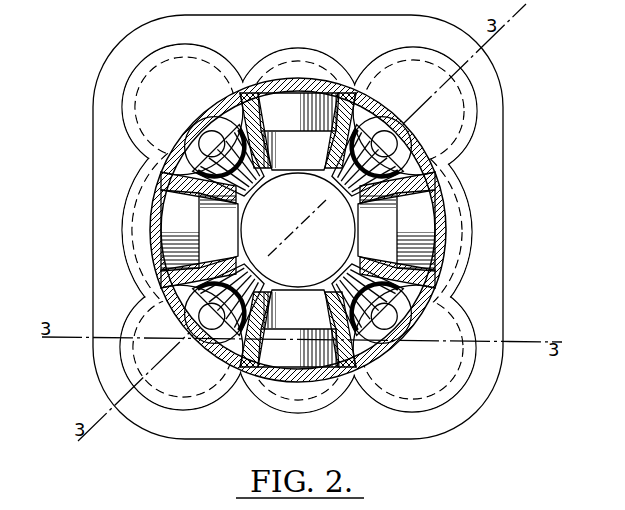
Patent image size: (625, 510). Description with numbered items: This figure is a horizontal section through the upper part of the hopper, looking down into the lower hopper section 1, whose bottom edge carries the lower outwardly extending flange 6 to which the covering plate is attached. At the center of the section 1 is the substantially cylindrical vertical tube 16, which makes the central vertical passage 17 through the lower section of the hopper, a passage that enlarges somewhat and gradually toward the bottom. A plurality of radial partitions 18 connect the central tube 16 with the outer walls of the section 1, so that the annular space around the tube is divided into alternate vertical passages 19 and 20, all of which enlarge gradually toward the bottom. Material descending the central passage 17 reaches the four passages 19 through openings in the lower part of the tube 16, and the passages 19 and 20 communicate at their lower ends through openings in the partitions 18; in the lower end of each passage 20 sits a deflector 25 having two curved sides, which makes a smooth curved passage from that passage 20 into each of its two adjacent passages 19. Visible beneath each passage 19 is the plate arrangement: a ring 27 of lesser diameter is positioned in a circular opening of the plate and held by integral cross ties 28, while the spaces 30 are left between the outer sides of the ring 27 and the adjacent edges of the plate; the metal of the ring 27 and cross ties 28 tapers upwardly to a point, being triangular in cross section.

The lower hopper section 1 is at (321, 230).
The lower outwardly extending flange 6 is at (312, 227).
The central vertical cylindrical tube 16 is at (298, 230).
The central vertical passage 17 is at (297, 228).
The radial partitions 18 is at (298, 230).
The vertical passages 19 is at (304, 232).
The vertical passages 20 is at (292, 234).
The deflector 25 is at (287, 227).
The ring 27 is at (306, 238).
The cross ties 28 is at (307, 238).
The spaces 30 is at (285, 238).